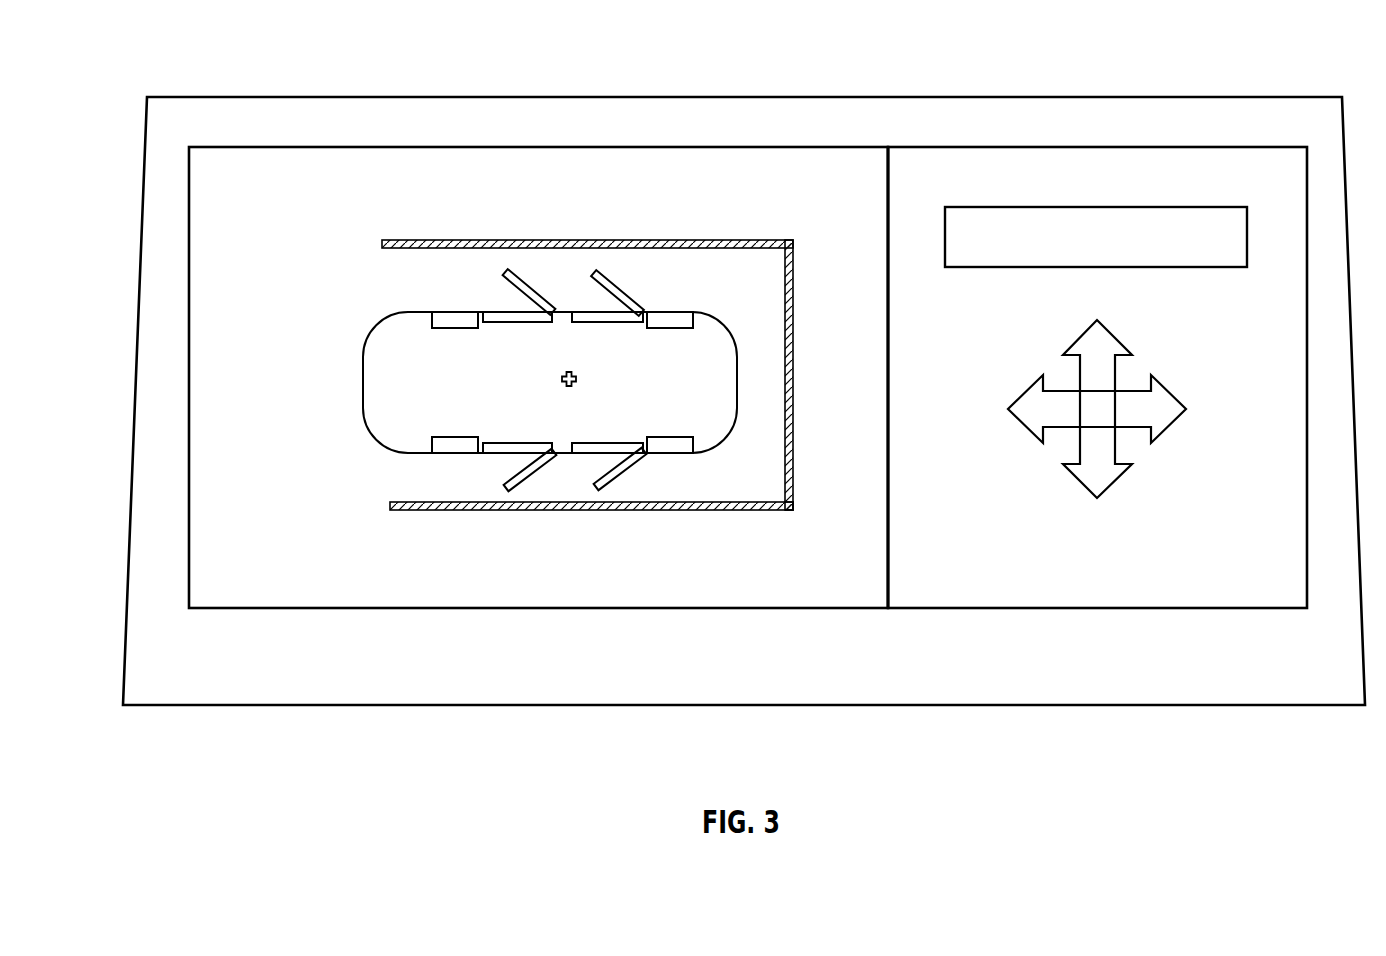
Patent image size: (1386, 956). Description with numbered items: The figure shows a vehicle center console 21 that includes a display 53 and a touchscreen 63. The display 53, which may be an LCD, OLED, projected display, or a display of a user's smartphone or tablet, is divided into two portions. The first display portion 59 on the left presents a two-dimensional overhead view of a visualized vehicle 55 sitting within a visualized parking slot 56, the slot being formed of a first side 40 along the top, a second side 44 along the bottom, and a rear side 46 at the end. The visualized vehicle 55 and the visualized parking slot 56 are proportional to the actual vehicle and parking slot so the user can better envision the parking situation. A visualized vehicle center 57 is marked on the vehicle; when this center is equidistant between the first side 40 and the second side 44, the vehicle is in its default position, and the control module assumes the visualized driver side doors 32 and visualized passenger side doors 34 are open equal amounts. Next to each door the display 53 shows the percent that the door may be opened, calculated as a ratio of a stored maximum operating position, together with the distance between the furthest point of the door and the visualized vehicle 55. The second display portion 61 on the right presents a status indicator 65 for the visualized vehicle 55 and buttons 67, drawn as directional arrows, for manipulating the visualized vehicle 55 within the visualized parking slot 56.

The center console 21 is at (163, 64).
The visualized driver side doors 32 is at (525, 282).
The visualized passenger side doors 34 is at (522, 484).
The first side 40 is at (382, 243).
The second side 44 is at (390, 506).
The rear side 46 is at (795, 290).
The display 53 is at (798, 621).
The visualized vehicle 55 is at (363, 382).
The visualized parking slot 56 is at (804, 529).
The visualized vehicle center 57 is at (577, 377).
The first display portion 59 is at (288, 621).
The second display portion 61 is at (1131, 621).
The touchscreen 63 is at (1096, 272).
The status indicator 65 is at (1003, 268).
The buttons 67 is at (1167, 473).